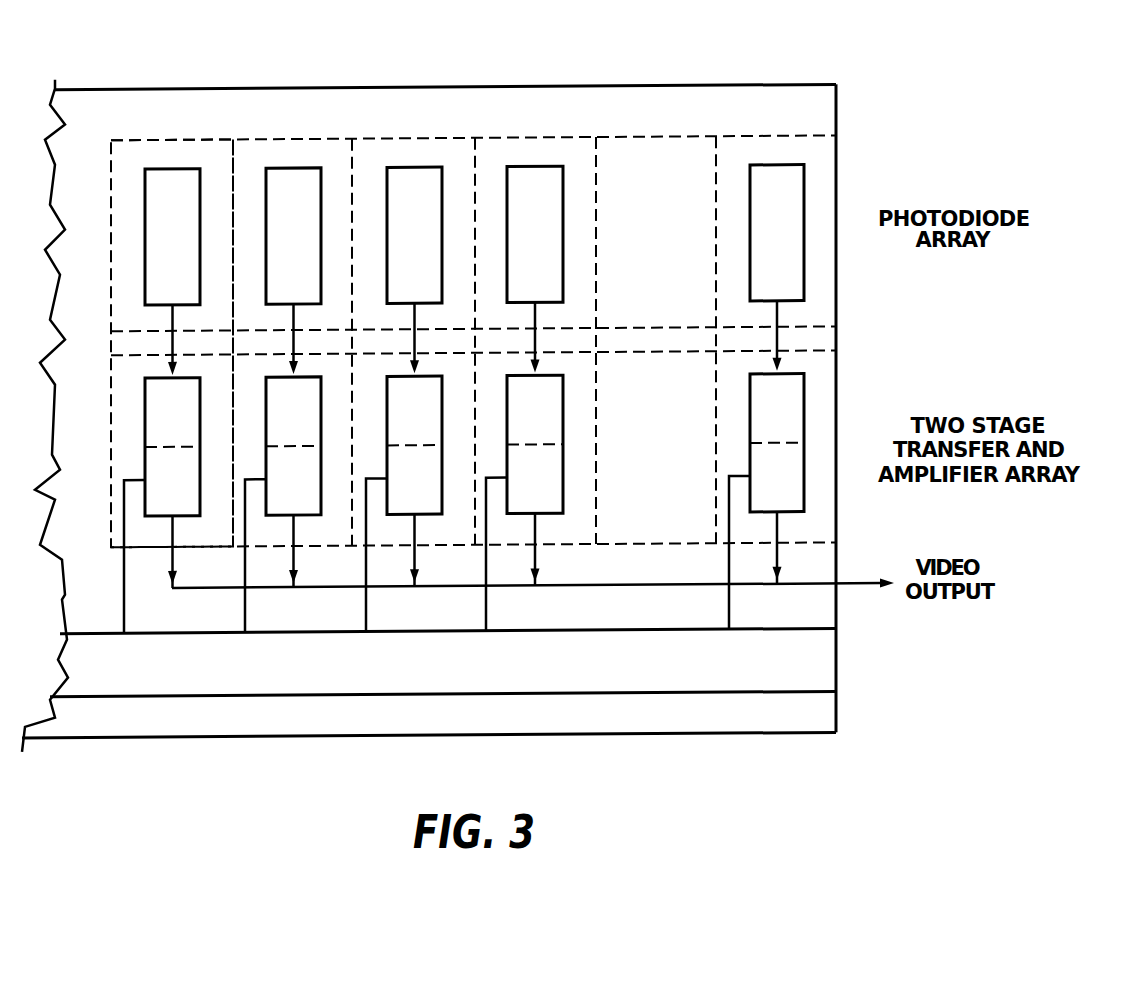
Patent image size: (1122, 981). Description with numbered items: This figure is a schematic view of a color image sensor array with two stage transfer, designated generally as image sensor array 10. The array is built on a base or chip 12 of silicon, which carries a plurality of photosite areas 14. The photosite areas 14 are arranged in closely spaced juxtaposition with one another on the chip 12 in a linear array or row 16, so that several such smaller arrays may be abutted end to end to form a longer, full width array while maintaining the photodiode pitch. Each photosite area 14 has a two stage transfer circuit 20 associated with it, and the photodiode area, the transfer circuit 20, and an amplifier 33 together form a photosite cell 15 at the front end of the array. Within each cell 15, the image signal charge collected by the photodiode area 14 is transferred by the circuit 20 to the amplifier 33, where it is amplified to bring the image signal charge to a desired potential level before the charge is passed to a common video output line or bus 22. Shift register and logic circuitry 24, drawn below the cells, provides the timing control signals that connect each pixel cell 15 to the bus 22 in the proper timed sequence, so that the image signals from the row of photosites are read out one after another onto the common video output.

The image sensor array 10 is at (403, 28).
The chip 12 is at (583, 86).
The photosite area 14 is at (296, 167).
The photosite cell 15 is at (260, 134).
The linear array 16 is at (637, 132).
The two stage transfer circuit 20 is at (164, 414).
The amplifier 33 is at (165, 480).
The video output line 22 is at (651, 588).
The shift register and logic circuitry 24 is at (315, 698).